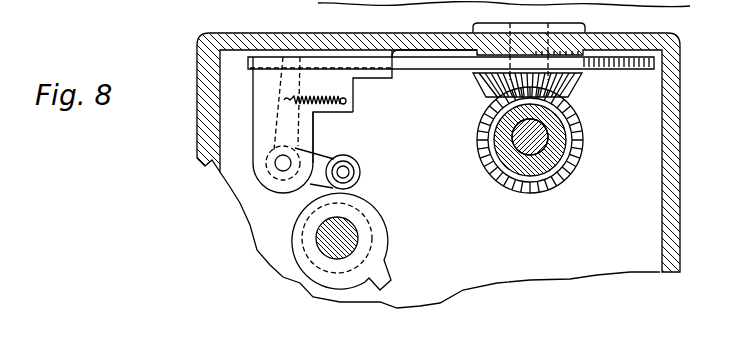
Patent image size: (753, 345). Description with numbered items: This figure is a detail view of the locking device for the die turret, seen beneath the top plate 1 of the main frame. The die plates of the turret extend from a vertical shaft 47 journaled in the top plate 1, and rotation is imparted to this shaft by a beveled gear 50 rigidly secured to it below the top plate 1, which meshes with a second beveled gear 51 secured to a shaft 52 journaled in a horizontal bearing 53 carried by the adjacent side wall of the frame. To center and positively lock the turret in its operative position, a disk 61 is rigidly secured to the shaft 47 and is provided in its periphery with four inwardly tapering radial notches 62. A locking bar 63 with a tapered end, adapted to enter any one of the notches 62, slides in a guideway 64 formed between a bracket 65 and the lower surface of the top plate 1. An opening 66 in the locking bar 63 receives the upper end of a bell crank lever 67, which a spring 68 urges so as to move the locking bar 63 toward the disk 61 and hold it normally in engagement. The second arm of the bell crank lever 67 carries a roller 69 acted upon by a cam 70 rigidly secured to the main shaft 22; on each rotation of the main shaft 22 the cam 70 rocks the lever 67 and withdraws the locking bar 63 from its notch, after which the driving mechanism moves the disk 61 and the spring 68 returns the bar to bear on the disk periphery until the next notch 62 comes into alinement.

The top plate 1 is at (362, 22).
The vertical shaft 47 is at (545, 26).
The beveled gear 50 is at (486, 78).
The second beveled gear 51 is at (573, 160).
The shaft 52 is at (540, 137).
The horizontal bearing 53 is at (556, 185).
The disk 61 is at (600, 68).
The radial notches 62 is at (519, 71).
The locking bar 63 is at (399, 63).
The guideway 64 is at (371, 70).
The bracket 65 is at (267, 93).
The opening 66 is at (321, 81).
The bell crank lever 67 is at (275, 128).
The spring 68 is at (331, 112).
The roller 69 is at (357, 163).
The cam 70 is at (383, 213).
The main shaft 22 is at (347, 247).